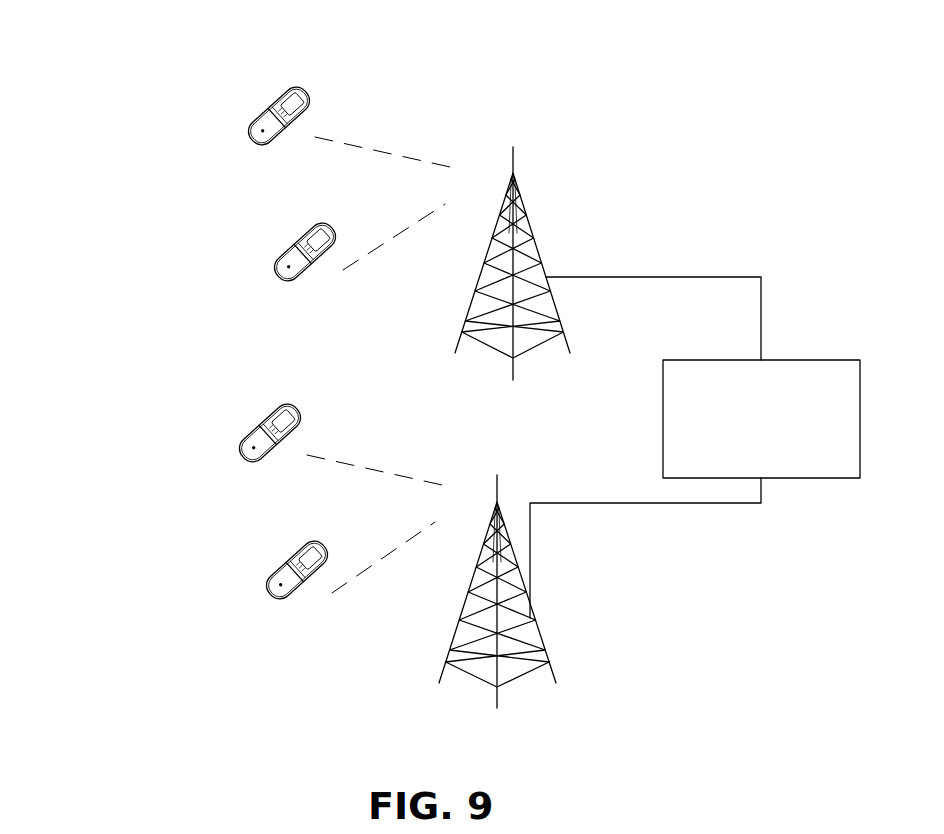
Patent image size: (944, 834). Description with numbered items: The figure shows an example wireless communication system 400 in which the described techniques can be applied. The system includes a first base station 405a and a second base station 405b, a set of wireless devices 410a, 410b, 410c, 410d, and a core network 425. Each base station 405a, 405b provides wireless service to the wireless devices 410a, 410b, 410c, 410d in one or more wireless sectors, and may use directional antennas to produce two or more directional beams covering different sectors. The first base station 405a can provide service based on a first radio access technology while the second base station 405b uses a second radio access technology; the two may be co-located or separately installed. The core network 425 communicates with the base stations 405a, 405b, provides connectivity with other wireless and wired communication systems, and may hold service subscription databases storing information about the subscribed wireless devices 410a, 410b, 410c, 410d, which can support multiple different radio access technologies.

The wireless communication system 400 is at (63, 26).
The wireless device 410a is at (270, 92).
The wireless device 410b is at (298, 228).
The wireless device 410c is at (263, 408).
The wireless device 410d is at (292, 546).
The first base station 405a is at (531, 222).
The second base station 405b is at (510, 512).
The core network 425 is at (683, 358).